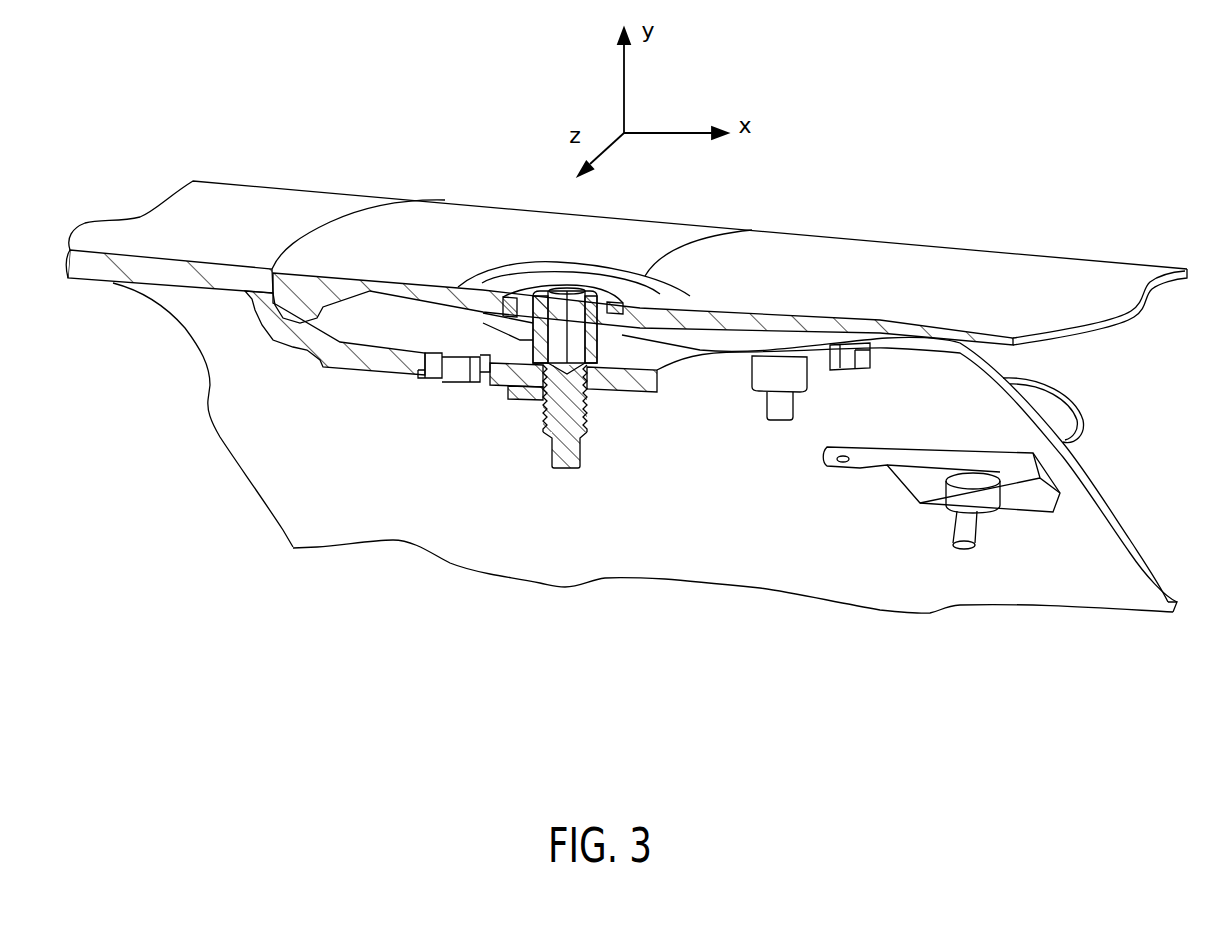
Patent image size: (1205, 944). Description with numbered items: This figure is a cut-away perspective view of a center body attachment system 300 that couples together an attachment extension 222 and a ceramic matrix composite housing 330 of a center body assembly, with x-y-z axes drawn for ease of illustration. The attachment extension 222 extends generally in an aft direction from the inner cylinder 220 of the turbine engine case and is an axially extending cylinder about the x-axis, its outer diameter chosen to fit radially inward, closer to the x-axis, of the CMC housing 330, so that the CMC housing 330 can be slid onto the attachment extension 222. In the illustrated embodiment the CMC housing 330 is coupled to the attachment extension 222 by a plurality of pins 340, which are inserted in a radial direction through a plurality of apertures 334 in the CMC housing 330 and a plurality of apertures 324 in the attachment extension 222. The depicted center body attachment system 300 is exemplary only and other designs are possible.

The center body attachment system 300 is at (1076, 118).
The inner cylinder 220 is at (253, 187).
The attachment extension 222 is at (390, 374).
The CMC housing 330 is at (808, 238).
The apertures in the CMC housing 334 is at (650, 270).
The apertures in the attachment extension 324 is at (604, 381).
The pins 340 is at (562, 468).